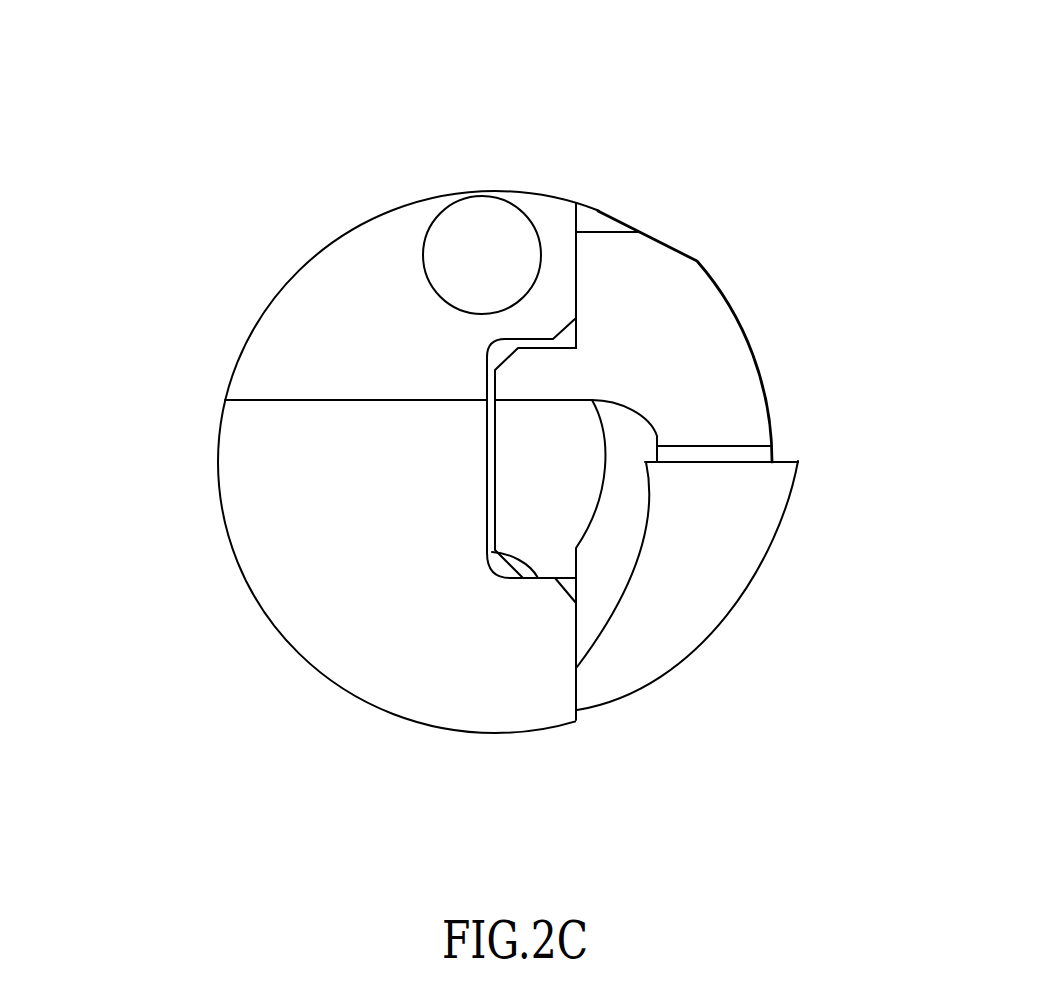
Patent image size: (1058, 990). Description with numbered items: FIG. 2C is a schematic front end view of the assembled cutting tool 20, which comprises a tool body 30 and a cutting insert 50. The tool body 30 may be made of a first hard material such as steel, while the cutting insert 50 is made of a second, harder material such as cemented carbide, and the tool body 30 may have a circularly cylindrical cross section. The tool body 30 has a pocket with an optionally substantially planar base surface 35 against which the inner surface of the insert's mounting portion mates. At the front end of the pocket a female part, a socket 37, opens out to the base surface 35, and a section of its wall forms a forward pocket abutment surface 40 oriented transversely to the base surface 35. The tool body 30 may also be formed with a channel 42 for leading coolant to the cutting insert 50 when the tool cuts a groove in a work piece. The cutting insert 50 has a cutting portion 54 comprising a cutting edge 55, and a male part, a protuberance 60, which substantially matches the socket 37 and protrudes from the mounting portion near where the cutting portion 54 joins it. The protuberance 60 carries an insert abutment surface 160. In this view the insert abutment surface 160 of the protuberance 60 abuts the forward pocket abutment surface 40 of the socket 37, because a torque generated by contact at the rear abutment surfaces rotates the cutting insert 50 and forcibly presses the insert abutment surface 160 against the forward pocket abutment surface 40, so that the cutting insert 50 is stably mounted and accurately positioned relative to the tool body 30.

The cutting tool 20 is at (232, 147).
The tool body 30 is at (227, 319).
The base surface 35 is at (596, 212).
The socket 37 is at (500, 350).
The forward pocket abutment surface 40 is at (535, 580).
The channel 42 is at (485, 248).
The cutting insert 50 is at (723, 282).
The cutting portion 54 is at (820, 510).
The cutting edge 55 is at (724, 462).
The protuberance 60 is at (562, 474).
The insert abutment surface 160 is at (492, 552).